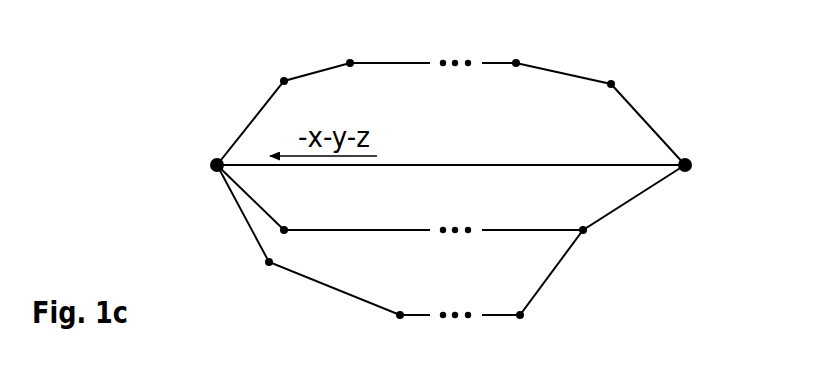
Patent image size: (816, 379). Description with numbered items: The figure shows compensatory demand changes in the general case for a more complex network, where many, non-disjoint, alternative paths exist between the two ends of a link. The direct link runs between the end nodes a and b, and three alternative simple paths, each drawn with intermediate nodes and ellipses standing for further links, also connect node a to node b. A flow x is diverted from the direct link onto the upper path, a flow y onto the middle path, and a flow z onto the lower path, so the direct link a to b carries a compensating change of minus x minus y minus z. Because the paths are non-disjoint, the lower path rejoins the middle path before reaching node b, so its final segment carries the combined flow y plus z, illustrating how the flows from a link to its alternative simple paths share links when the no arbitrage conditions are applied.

The source node a is at (198, 163).
The sink node b is at (702, 164).
The flow x is at (666, 128).
The flow y is at (252, 188).
The flow z is at (577, 263).